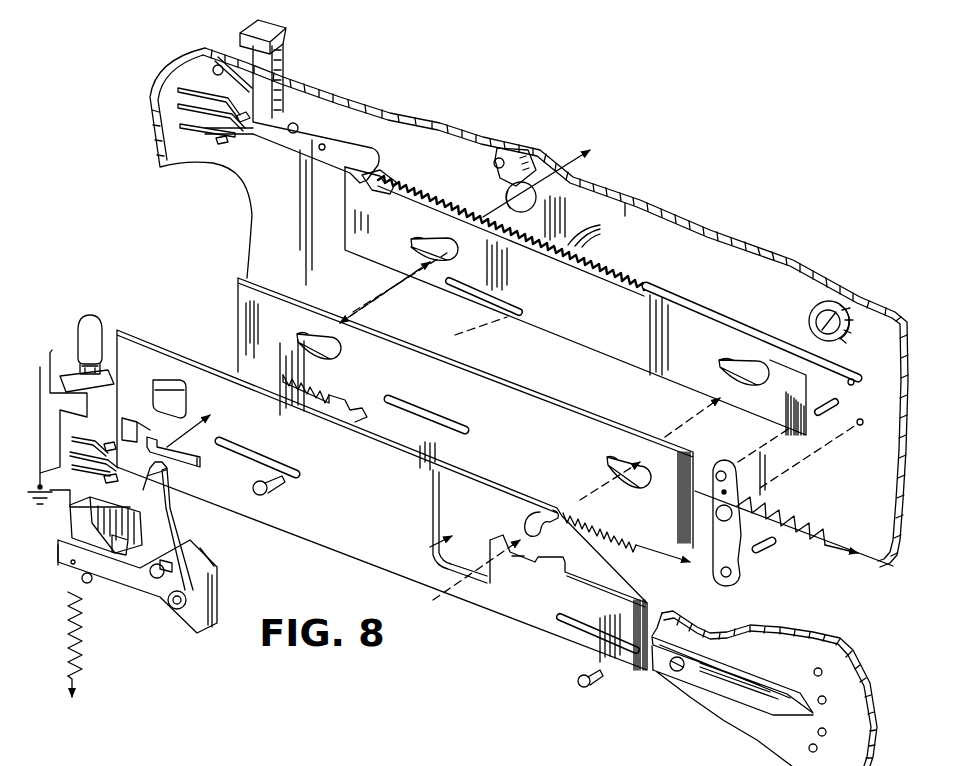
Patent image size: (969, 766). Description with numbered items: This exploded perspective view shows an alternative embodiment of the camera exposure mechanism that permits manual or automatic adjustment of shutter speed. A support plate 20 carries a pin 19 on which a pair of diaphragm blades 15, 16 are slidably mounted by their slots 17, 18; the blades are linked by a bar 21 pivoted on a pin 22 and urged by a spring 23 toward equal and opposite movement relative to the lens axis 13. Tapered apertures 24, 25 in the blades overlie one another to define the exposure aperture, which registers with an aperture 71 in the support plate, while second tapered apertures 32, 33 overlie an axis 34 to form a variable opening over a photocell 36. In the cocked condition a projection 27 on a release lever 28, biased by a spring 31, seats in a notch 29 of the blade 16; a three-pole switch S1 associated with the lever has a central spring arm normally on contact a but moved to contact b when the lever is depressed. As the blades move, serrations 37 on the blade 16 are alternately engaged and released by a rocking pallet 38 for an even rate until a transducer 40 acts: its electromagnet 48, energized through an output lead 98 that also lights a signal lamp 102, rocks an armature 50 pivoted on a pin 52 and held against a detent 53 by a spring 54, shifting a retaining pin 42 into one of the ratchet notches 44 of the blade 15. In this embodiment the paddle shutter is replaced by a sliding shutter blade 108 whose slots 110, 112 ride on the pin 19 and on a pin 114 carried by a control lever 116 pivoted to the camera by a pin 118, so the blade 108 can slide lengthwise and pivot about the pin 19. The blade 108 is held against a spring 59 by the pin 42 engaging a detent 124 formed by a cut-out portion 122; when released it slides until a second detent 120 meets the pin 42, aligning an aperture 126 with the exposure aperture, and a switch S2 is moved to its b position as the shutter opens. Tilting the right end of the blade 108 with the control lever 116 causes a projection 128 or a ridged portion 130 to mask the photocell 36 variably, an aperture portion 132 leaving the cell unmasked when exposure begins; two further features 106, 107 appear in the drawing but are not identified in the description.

The lens axis 13 is at (370, 300).
The blade 15 is at (561, 405).
The blade 16 is at (706, 300).
The slot 17 is at (442, 427).
The slot 18 is at (490, 292).
The pin 19 is at (276, 494).
The support plate 20 is at (690, 220).
The bar 21 is at (745, 552).
The pin 22 is at (716, 478).
The spring 23 is at (816, 540).
The tapered aperture 24 is at (300, 338).
The tapered aperture 25 is at (432, 234).
The projection 27 is at (378, 178).
The release lever 28 is at (290, 58).
The notch 29 is at (370, 190).
The spring 31 is at (230, 62).
The second tapered aperture 32 is at (608, 466).
The second tapered aperture 33 is at (730, 360).
The axis 34 is at (692, 420).
The photocell 36 is at (815, 300).
The serrations 37 is at (582, 240).
The rocking pallet 38 is at (516, 150).
The transducer 40 is at (52, 552).
The retaining pin 42 is at (186, 522).
The ratchet notches 44 is at (312, 392).
The electromagnet 48 is at (72, 525).
The armature 50 is at (142, 592).
The pin 52 is at (168, 600).
The detent 53 is at (74, 564).
The spring 54 is at (83, 652).
The spring 59 is at (622, 530).
The aperture 71 is at (538, 205).
The output lead 98 is at (52, 350).
The signal lamp 102 is at (91, 320).
The front plate 106 is at (292, 352).
The notch 107 is at (352, 402).
The shutter blade 108 is at (488, 606).
The slot 110 is at (282, 470).
The slot 112 is at (582, 652).
The pin 114 is at (575, 692).
The control lever 116 is at (760, 688).
The pin 118 is at (672, 673).
The second detent 120 is at (143, 430).
The cut-out portion 122 is at (197, 456).
The detent 124 is at (182, 446).
The aperture 126 is at (175, 378).
The projection 128 is at (514, 521).
The ridged portion 130 is at (518, 566).
The aperture portion 132 is at (430, 568).
The three pole switch S1 is at (257, 150).
The switch S2 is at (108, 420).
The contact a is at (240, 115).
The contact b is at (223, 142).